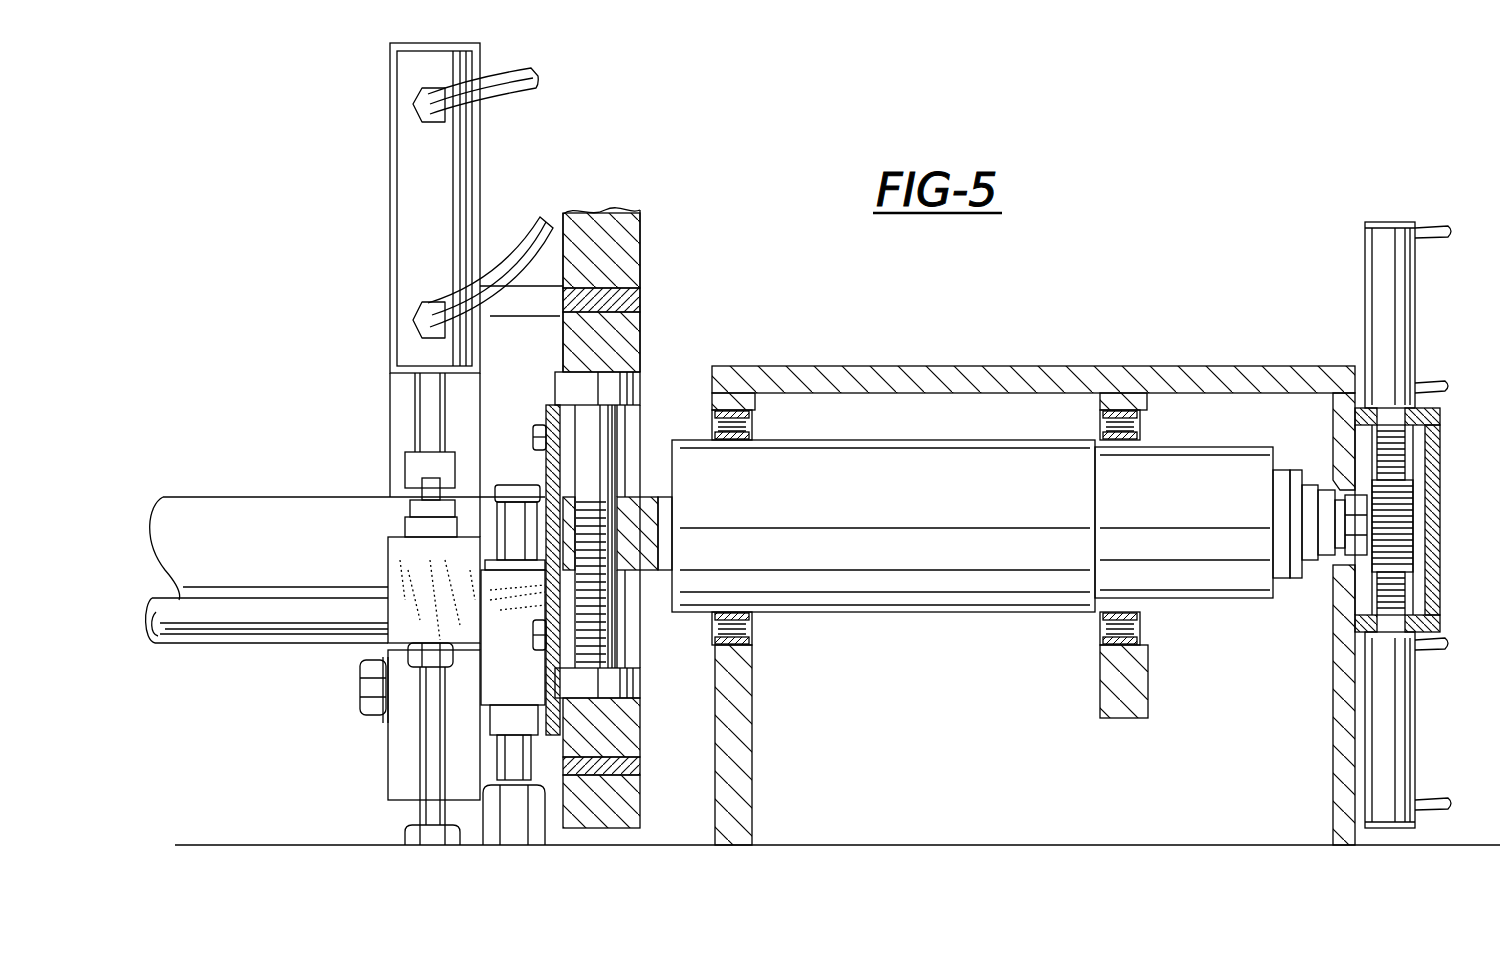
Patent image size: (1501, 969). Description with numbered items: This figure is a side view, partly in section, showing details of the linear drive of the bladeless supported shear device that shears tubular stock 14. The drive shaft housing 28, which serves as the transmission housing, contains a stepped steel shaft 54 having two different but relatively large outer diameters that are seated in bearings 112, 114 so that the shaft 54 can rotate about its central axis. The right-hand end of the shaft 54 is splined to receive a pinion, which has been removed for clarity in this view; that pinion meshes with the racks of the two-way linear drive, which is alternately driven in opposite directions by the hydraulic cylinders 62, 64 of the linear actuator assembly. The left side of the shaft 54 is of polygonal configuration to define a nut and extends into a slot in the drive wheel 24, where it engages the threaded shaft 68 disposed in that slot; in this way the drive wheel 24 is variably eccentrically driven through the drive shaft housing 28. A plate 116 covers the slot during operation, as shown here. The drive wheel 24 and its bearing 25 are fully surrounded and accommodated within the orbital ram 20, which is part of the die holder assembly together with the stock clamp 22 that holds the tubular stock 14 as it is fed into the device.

The tubular stock 14 is at (318, 515).
The orbital ram 20 is at (671, 512).
The stock clamp 22 is at (390, 182).
The drive wheel 24 is at (640, 330).
The bearing 25 is at (640, 305).
The drive shaft housing 28 is at (1155, 366).
The shaft 54 is at (975, 612).
The hydraulic cylinder 62 is at (1365, 240).
The hydraulic cylinder 64 is at (1415, 728).
The threaded shaft 68 is at (615, 612).
The bearing 112 is at (752, 628).
The bearing 114 is at (1140, 628).
The plate 116 is at (548, 412).